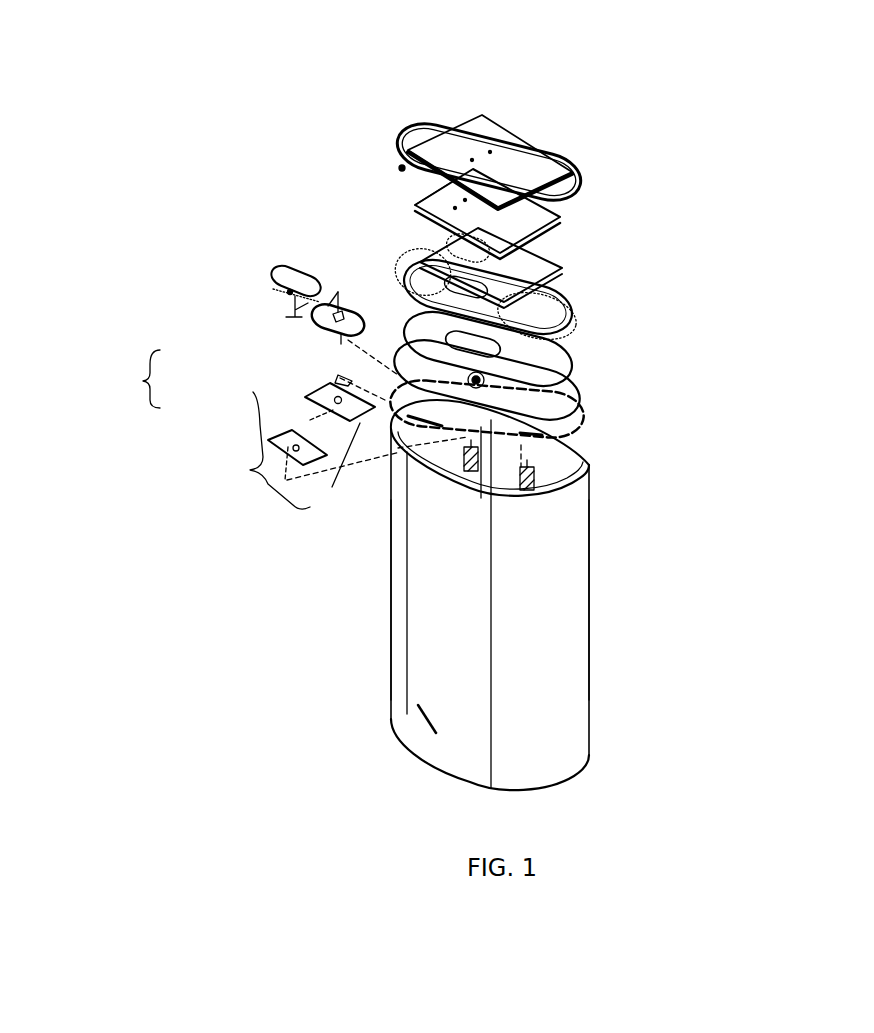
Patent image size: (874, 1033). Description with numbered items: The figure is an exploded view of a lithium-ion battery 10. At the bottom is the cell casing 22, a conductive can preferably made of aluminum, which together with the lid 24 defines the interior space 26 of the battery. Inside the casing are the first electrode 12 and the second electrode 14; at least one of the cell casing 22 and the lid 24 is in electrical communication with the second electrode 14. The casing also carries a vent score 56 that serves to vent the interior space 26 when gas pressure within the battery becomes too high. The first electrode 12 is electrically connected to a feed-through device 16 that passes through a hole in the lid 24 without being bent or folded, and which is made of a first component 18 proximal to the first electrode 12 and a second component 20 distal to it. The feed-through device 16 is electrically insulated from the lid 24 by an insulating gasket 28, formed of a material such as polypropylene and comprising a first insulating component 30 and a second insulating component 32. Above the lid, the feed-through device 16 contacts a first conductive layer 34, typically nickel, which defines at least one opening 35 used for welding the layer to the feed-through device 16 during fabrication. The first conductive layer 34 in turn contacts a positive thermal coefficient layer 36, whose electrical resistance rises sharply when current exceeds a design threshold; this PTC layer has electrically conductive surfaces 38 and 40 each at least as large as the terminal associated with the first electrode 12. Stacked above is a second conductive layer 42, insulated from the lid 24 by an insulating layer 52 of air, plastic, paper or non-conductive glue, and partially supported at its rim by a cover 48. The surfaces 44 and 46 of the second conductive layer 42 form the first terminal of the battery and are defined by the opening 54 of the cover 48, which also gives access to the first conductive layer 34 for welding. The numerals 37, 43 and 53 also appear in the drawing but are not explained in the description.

The lithium-ion battery 10 is at (168, 127).
The first electrode 12 is at (468, 458).
The second electrode 14 is at (548, 469).
The feed-through device 16 is at (134, 379).
The first component 18 is at (263, 433).
The second component 20 is at (283, 288).
The cell casing 22 is at (405, 622).
The lid 24 is at (570, 400).
The interior space 26 is at (547, 467).
The insulating gasket 28 is at (306, 450).
The first insulating component 30 is at (331, 467).
The second insulating component 32 is at (325, 325).
The first conductive layer 34 is at (430, 210).
The opening 35 is at (478, 218).
The positive thermal coefficient layer 36 is at (523, 253).
The aperture 37 is at (448, 252).
The electrically conductive surface 38 is at (548, 255).
The electrically conductive surface 40 is at (550, 288).
The second conductive layer 42 is at (513, 296).
The recess 43 is at (480, 300).
The surface 44 is at (407, 316).
The surface 46 is at (398, 257).
The cover 48 is at (402, 170).
The insulating layer 52 is at (560, 355).
The boss 53 is at (483, 377).
The opening 54 is at (453, 153).
The vent score 56 is at (472, 498).